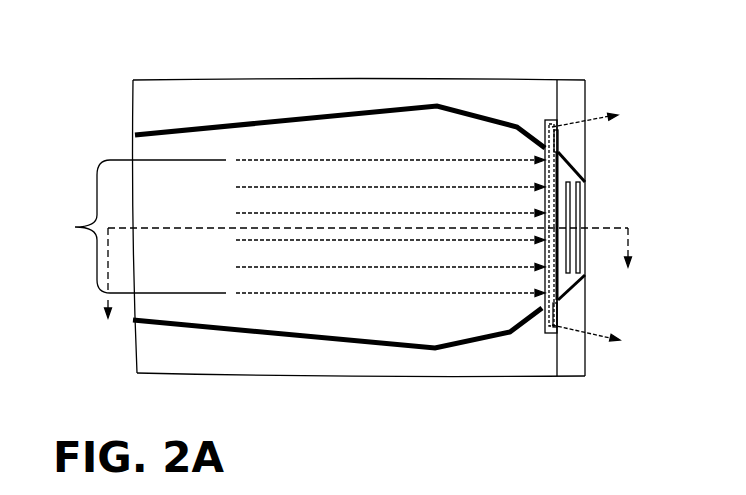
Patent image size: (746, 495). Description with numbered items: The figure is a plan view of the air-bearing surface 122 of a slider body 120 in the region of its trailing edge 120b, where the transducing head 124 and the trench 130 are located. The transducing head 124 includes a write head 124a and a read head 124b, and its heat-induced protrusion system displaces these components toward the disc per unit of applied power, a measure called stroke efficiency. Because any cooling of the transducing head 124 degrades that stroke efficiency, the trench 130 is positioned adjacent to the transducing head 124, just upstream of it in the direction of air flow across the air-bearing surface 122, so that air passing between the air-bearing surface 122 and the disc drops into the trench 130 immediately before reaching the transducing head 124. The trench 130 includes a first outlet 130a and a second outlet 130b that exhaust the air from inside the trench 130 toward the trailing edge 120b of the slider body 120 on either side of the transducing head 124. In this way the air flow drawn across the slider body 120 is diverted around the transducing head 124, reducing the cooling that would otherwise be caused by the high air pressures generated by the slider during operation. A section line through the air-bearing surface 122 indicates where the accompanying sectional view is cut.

The slider body 120 is at (401, 63).
The trailing edge 120b is at (587, 82).
The air-bearing surface 122 is at (167, 92).
The transducing head 124 is at (596, 205).
The write head 124a is at (568, 182).
The read head 124b is at (577, 186).
The trench 130 is at (550, 120).
The first outlet 130a is at (566, 120).
The second outlet 130b is at (566, 338).